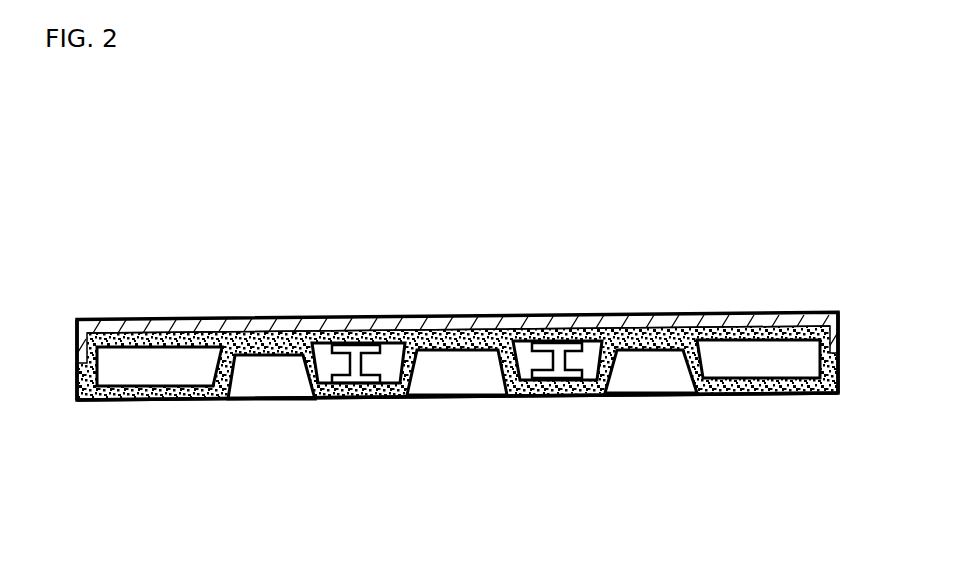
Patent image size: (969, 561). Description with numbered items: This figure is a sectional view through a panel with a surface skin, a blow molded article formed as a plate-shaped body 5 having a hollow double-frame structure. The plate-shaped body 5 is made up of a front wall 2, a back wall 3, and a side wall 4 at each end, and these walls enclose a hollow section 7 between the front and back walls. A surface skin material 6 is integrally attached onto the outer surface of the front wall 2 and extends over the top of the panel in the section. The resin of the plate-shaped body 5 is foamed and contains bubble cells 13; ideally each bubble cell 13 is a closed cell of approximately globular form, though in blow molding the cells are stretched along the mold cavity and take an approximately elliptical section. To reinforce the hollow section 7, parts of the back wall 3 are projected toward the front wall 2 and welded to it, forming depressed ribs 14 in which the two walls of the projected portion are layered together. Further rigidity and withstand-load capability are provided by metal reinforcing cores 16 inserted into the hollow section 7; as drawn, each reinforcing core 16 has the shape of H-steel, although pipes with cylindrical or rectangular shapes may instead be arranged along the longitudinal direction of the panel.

The front wall 2 is at (733, 315).
The back wall 3 is at (174, 400).
The side wall 4 is at (77, 370).
The plate-shaped body 5 is at (358, 406).
The surface skin material 6 is at (588, 315).
The hollow section 7 is at (133, 371).
The bubble cell 13 is at (417, 320).
The depressed rib 14 is at (232, 372).
The reinforcing core 16 is at (387, 367).